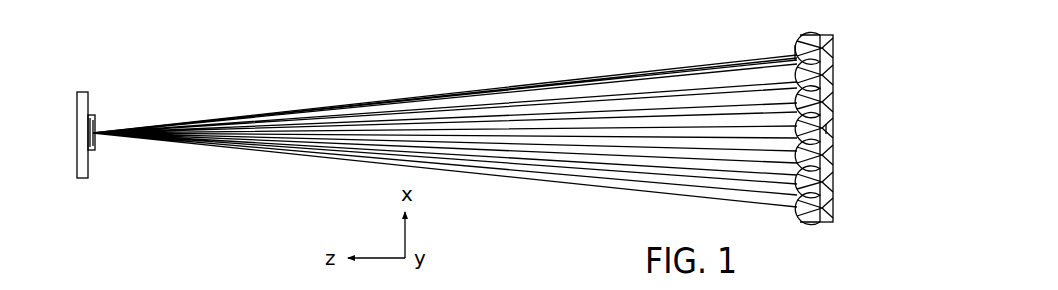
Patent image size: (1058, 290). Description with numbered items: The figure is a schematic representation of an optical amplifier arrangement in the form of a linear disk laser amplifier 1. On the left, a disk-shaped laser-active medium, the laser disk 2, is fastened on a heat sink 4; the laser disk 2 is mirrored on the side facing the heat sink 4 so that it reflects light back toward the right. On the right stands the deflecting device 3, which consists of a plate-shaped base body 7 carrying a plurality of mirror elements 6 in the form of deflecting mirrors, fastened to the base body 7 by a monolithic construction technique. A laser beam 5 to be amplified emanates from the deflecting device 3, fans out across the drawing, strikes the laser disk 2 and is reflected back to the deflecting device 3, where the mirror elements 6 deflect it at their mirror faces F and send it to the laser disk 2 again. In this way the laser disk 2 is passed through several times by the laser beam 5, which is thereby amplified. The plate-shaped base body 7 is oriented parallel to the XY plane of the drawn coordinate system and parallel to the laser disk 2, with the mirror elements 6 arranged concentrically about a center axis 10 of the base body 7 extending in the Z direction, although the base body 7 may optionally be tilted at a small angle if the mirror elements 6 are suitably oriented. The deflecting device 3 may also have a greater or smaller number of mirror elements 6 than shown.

The disk laser amplifier 1 is at (318, 79).
The laser disk 2 is at (95, 150).
The deflecting device 3 is at (793, 30).
The heat sink 4 is at (77, 178).
The laser beam 5 is at (590, 74).
The mirror elements 6 is at (835, 78).
The plate-shaped base body 7 is at (828, 220).
The center axis 10 is at (835, 130).
The mirror faces F is at (795, 53).